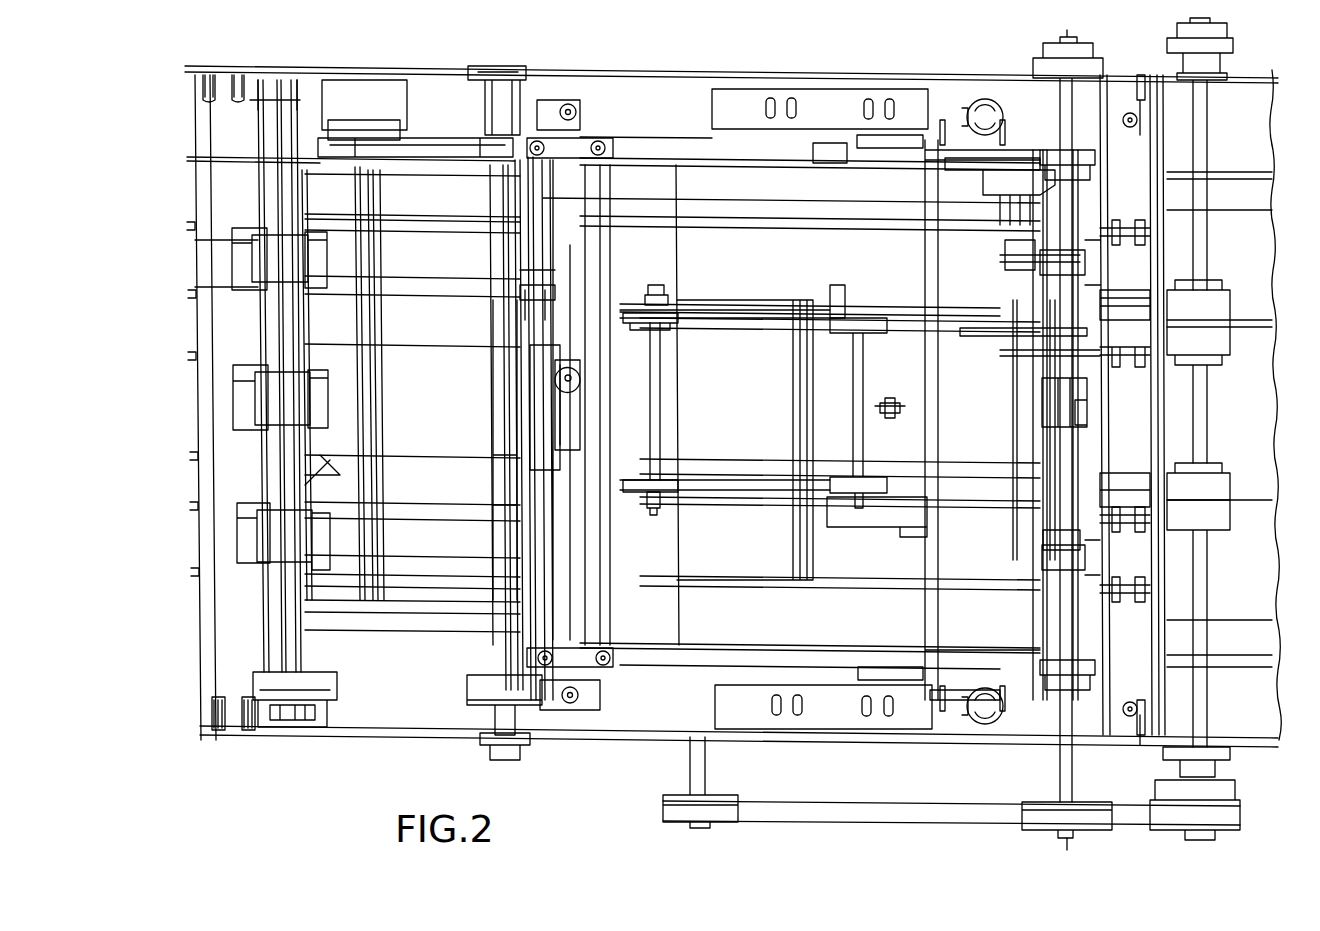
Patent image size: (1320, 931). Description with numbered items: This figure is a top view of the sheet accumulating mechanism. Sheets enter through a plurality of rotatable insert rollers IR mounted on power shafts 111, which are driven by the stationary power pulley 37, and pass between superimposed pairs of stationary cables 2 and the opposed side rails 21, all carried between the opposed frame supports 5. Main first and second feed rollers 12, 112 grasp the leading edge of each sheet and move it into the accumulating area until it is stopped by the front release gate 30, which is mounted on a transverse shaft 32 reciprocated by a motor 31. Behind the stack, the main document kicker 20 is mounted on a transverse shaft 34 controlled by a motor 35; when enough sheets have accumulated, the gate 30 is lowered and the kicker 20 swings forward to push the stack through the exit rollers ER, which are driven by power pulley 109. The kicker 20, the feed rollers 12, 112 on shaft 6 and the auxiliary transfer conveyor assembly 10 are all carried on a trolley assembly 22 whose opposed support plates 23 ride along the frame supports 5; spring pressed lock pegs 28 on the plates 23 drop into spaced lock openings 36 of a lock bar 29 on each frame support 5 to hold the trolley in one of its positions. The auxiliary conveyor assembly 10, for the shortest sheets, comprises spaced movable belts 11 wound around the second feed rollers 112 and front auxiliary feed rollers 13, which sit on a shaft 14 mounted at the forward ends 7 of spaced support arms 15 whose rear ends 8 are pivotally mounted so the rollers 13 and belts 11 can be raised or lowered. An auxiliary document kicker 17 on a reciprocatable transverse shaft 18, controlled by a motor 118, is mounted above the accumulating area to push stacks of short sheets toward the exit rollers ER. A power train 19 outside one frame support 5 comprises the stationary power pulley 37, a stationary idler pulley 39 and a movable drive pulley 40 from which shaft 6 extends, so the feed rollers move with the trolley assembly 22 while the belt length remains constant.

The stationary cables 2 is at (416, 228).
The frame supports 5 is at (923, 82).
The shaft 6 is at (1068, 770).
The forward ends 7 is at (672, 298).
The rear ends 8 is at (858, 316).
The auxiliary transfer conveyor assembly 10 is at (285, 97).
The movable belts 11 is at (756, 330).
The main first feed rollers 12 is at (1085, 258).
The front auxiliary feed rollers 13 is at (662, 318).
The shaft 14 is at (665, 388).
The support arms 15 is at (769, 300).
The auxiliary document kicker 17 is at (555, 362).
The reciprocatable transverse shaft 18 is at (520, 190).
The power train 19 is at (1136, 845).
The main document kicker 20 is at (1030, 368).
The side rails 21 is at (818, 158).
The trolley assembly 22 is at (1018, 710).
The support plates 23 is at (968, 150).
The lock pegs 28 is at (985, 117).
The lock bar 29 is at (726, 98).
The front release gate 30 is at (350, 380).
The motor 31 is at (372, 98).
The transverse shaft 32 is at (395, 130).
The transverse shaft 34 is at (1020, 258).
The motor 35 is at (1055, 160).
The lock openings 36 is at (790, 98).
The power pulley 37 is at (1238, 810).
The idler pulley 39 is at (680, 806).
The drive pulley 40 is at (1090, 830).
The power pulley 109 is at (343, 685).
The power shafts 111 is at (1200, 595).
The main second feed rollers 112 is at (1085, 322).
The motor 118 is at (510, 108).
The exit rollers ER is at (277, 390).
The insert rollers IR is at (1212, 308).